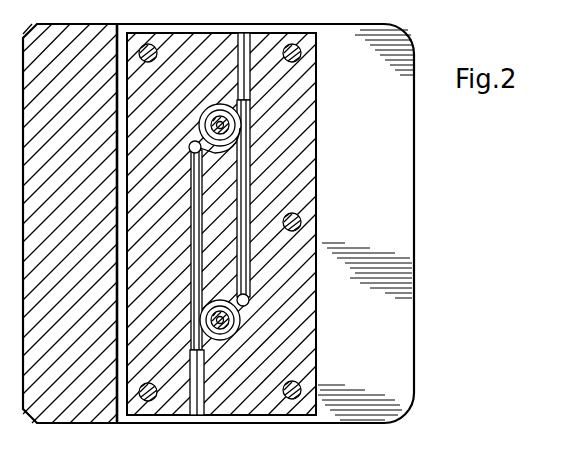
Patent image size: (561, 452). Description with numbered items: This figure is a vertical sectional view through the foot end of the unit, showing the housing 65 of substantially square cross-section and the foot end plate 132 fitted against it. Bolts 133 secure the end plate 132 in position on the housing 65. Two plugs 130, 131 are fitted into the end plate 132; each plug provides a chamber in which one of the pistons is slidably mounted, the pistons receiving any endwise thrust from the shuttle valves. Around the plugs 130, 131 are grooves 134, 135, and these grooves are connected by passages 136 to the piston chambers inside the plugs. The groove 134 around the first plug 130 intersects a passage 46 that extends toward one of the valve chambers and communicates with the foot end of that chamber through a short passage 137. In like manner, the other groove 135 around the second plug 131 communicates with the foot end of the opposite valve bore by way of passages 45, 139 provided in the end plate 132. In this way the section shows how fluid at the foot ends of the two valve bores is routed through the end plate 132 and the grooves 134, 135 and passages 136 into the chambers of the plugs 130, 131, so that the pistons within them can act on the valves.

The housing 65 is at (403, 187).
The foot end plate 132 is at (296, 356).
The bolts 133 is at (301, 59).
The plug 130 is at (239, 120).
The passages 136 is at (233, 132).
The groove 134 is at (242, 142).
The passage 139 is at (213, 157).
The passage 46 is at (247, 196).
The passage 45 is at (203, 250).
The short passage 137 is at (250, 298).
The groove 135 is at (238, 312).
The plug 131 is at (240, 322).